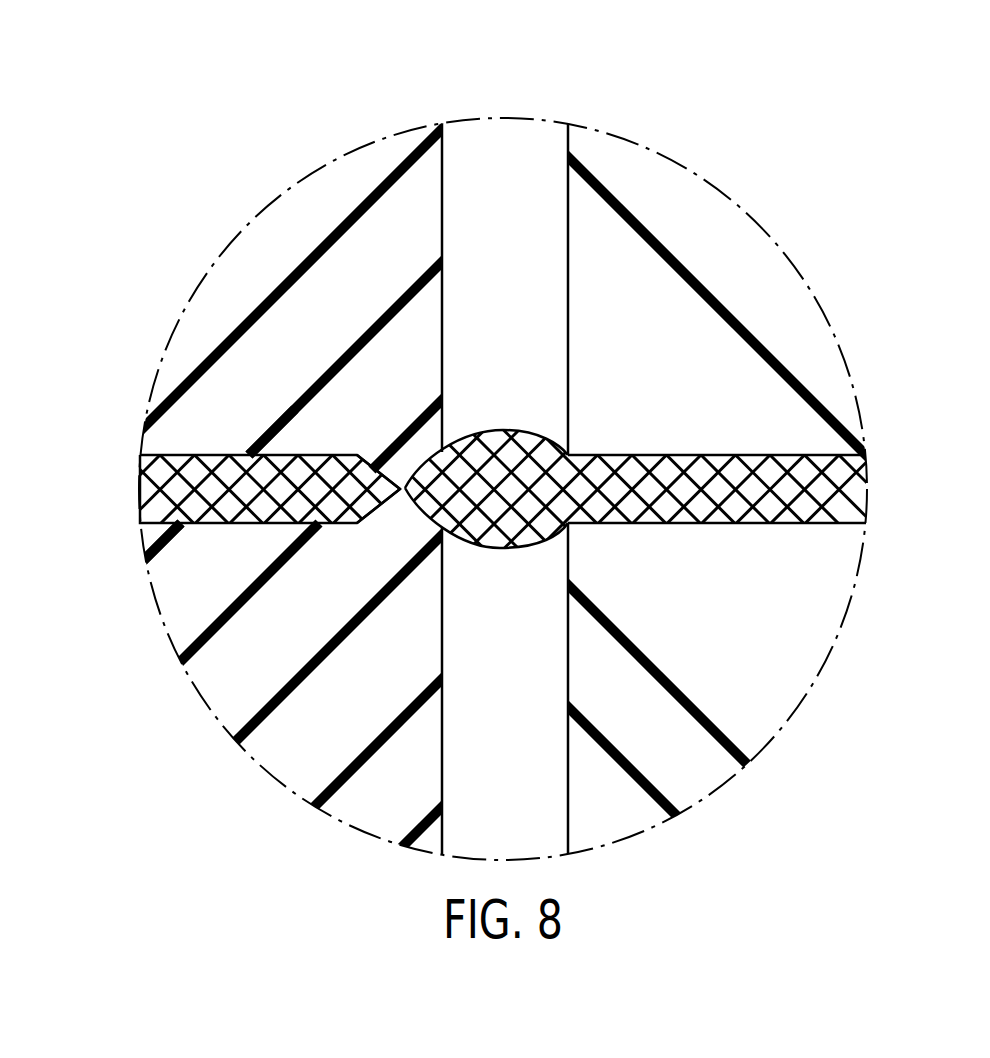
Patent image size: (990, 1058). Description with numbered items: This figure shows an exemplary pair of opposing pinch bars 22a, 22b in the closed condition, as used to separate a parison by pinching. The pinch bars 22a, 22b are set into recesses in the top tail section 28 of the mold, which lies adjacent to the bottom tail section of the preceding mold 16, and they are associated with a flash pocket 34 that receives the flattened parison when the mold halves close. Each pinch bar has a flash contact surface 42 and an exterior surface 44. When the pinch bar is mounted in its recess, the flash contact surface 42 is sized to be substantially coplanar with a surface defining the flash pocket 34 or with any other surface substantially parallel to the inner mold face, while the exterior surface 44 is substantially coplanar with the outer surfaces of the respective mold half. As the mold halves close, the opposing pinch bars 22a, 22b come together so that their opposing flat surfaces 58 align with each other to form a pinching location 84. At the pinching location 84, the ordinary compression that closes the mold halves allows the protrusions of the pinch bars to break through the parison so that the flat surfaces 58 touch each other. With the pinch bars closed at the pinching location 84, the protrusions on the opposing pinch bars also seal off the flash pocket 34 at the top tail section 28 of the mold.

The preceding mold 16 is at (676, 190).
The pinch bar 22a is at (337, 182).
The pinch bar 22b is at (212, 685).
The top tail section 28 is at (459, 102).
The flash pocket 34 is at (163, 487).
The flash contact surface 42 is at (228, 455).
The exterior surface 44 is at (443, 188).
The flat surface 58 is at (393, 487).
The pinching location 84 is at (495, 548).